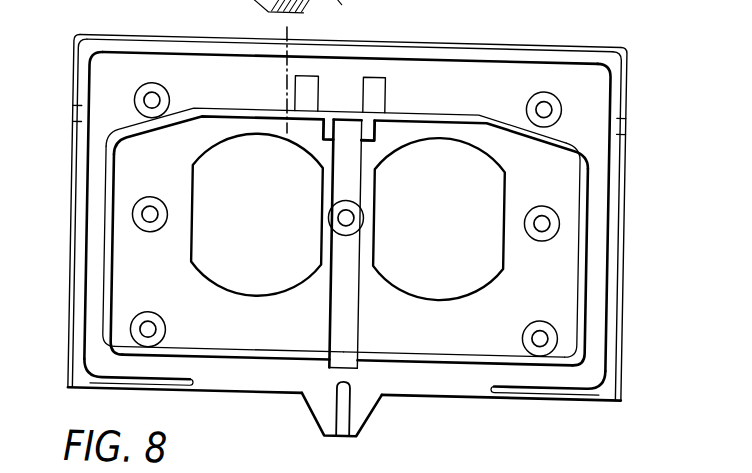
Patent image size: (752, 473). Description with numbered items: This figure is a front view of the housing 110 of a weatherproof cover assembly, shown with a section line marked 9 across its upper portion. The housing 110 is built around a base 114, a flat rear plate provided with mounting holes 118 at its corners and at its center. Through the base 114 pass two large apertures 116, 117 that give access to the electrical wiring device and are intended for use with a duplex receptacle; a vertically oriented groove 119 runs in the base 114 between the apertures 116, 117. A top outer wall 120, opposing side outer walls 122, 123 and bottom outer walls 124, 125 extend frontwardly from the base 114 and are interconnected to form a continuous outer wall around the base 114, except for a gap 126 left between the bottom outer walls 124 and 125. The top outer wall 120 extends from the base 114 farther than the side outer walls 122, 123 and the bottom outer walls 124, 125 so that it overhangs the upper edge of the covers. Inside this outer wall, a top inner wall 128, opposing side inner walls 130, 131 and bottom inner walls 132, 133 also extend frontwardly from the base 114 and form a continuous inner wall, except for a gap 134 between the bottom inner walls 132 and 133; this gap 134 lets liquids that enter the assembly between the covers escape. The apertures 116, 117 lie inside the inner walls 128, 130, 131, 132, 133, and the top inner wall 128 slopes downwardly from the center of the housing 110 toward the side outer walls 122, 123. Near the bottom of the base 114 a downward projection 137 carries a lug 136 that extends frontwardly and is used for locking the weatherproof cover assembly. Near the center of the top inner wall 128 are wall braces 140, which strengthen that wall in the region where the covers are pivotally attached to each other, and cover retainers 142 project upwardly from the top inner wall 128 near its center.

The section line 9- 9 is at (277, 29).
The housing 110 is at (352, 236).
The base 114 is at (345, 225).
The aperture 116 is at (272, 221).
The aperture 117 is at (452, 220).
The mounting holes 118 is at (164, 104).
The groove 119 is at (354, 305).
The top outer wall 120 is at (417, 45).
The side outer wall 122 is at (70, 220).
The side outer wall 123 is at (621, 262).
The bottom outer wall 124 is at (125, 392).
The bottom outer wall 125 is at (518, 393).
The gap 126 is at (261, 395).
The top inner wall 128 is at (245, 110).
The side inner wall 130 is at (116, 303).
The side inner wall 131 is at (579, 258).
The bottom inner wall 132 is at (272, 355).
The bottom inner wall 133 is at (467, 350).
The gap 134 is at (340, 358).
The lug 136 is at (341, 425).
The downward projection 137 is at (371, 420).
The wall braces 140 is at (321, 142).
The cover retainers 142 is at (290, 93).